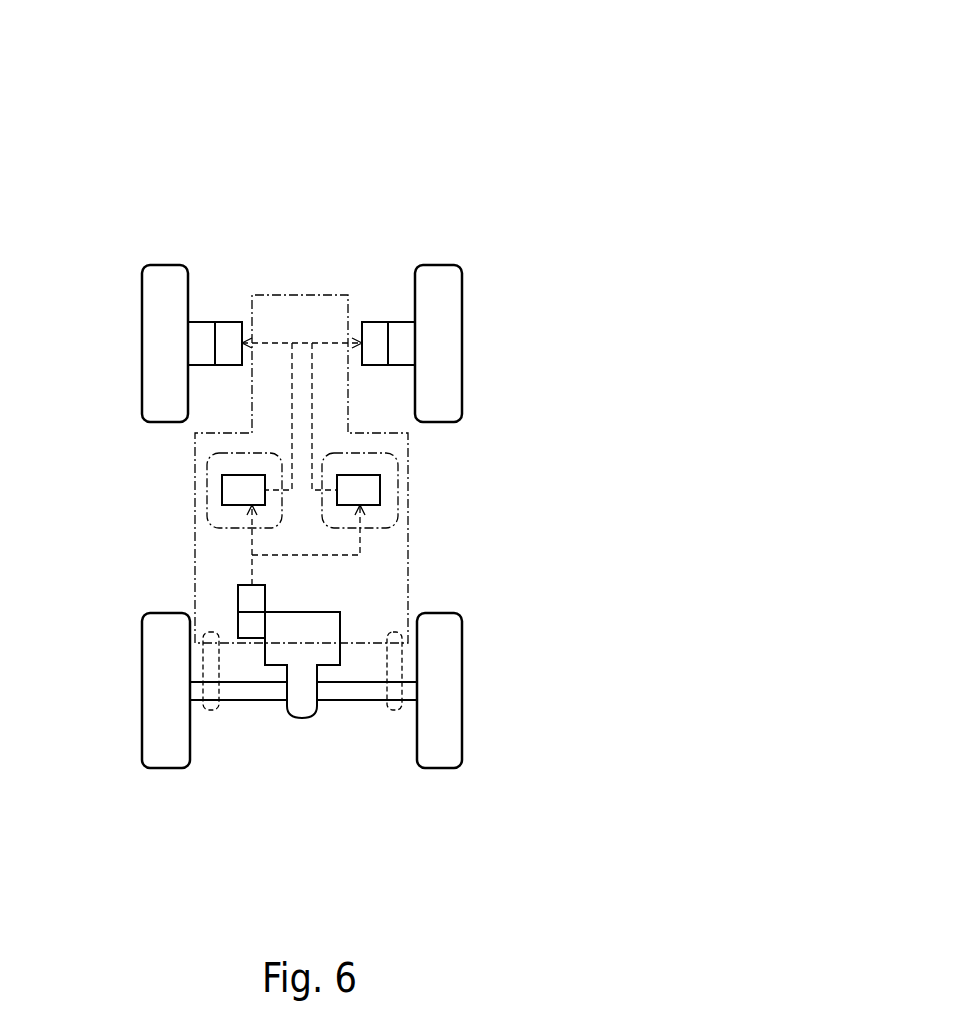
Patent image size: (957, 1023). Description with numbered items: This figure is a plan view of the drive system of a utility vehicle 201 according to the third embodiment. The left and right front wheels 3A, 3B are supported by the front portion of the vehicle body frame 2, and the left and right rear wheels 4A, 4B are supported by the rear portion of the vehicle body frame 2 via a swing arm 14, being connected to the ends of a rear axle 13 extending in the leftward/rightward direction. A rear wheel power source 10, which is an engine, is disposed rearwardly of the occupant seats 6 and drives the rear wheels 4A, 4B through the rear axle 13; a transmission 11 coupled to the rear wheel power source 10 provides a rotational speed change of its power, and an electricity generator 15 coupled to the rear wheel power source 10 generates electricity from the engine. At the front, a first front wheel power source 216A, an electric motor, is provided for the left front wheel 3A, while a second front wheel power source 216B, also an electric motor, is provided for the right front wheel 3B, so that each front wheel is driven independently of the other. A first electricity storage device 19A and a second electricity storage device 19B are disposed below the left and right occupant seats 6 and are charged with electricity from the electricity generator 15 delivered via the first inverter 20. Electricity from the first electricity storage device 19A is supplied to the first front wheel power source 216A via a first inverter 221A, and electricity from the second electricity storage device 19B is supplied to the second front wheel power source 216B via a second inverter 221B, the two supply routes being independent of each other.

The utility vehicle 201 is at (507, 140).
The vehicle body frame 2 is at (408, 560).
The left front wheel 3A is at (142, 297).
The right front wheel 3B is at (462, 297).
The left rear wheel 4A is at (142, 648).
The right rear wheel 4B is at (462, 645).
The first front wheel power source 216A is at (203, 322).
The second front wheel power source 216B is at (400, 322).
The first inverter 221A is at (225, 322).
The second inverter 221B is at (376, 322).
The first electricity storage device 19A is at (222, 490).
The second electricity storage device 19B is at (380, 483).
The occupant seats 6 is at (207, 505).
The first inverter 20 is at (238, 592).
The electricity generator 15 is at (238, 613).
The rear wheel power source 10 is at (283, 623).
The transmission 11 is at (323, 653).
The rear axle 13 is at (363, 703).
The swing arm 14 is at (193, 667).